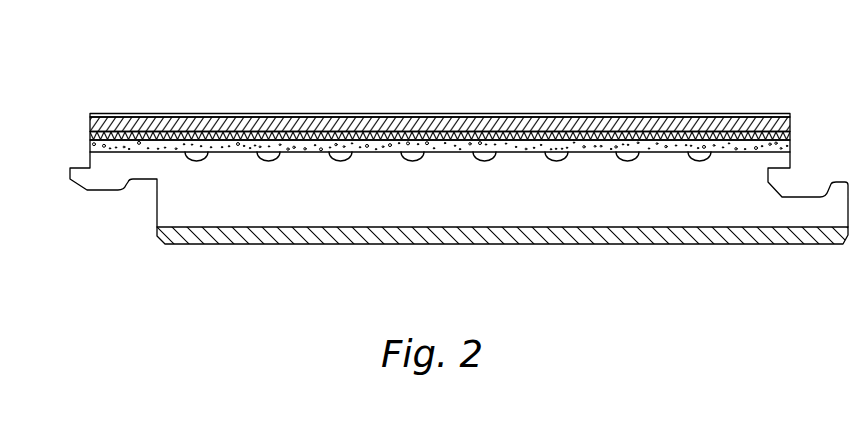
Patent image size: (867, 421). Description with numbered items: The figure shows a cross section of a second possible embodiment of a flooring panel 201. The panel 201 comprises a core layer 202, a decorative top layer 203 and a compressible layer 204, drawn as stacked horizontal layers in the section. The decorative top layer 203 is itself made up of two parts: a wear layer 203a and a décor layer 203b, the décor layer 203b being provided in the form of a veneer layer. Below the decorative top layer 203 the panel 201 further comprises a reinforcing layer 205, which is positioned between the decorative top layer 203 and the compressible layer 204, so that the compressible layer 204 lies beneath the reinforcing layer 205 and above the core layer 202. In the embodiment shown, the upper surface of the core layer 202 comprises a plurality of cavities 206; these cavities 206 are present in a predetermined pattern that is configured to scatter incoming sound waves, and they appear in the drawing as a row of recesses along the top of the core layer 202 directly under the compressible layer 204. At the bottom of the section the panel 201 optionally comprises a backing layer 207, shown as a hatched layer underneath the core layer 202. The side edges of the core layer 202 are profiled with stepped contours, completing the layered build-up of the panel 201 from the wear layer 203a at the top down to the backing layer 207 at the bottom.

The flooring panel 201 is at (90, 84).
The core layer 202 is at (383, 192).
The decorative top layer 203 is at (87, 132).
The wear layer 203a is at (333, 113).
The décor layer 203b is at (430, 120).
The compressible layer 204 is at (513, 147).
The reinforcing layer 205 is at (550, 141).
The cavities 206 is at (198, 160).
The backing layer 207 is at (762, 233).